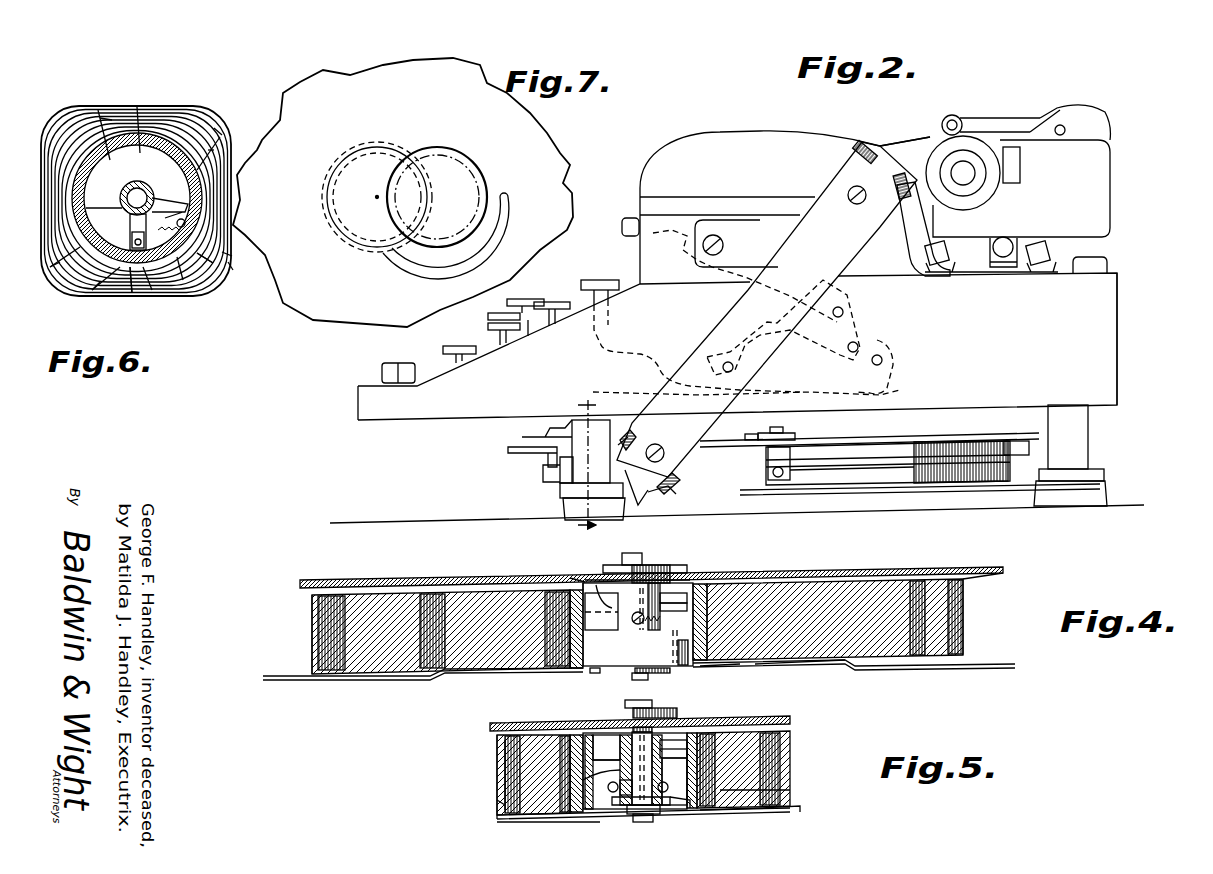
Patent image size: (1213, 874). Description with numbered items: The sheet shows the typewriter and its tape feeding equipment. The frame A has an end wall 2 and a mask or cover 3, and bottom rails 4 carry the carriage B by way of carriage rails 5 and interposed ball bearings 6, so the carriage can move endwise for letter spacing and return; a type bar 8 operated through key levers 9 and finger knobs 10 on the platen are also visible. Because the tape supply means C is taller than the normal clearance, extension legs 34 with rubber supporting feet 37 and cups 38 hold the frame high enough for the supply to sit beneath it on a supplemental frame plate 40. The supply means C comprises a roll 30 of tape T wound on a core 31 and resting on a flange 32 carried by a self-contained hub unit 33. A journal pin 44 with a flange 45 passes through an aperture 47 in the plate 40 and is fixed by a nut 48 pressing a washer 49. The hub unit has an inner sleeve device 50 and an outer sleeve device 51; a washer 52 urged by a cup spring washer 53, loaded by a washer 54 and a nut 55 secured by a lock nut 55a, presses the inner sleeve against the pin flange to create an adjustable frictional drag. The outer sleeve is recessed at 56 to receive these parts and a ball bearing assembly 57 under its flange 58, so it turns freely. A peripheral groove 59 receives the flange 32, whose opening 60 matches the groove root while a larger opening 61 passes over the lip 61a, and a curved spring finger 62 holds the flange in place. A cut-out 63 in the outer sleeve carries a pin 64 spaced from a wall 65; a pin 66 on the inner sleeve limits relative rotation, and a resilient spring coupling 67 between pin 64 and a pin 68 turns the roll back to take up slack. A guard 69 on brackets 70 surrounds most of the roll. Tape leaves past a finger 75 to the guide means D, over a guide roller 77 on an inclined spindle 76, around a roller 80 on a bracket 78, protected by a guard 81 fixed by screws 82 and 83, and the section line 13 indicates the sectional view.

In FIG. 2, the end wall 2 is at (1103, 308).
In FIG. 2, the mask or cover 3 is at (707, 135).
In FIG. 2, the bottom rails 4 is at (990, 252).
In FIG. 2, the carriage rails 5 is at (925, 250).
In FIG. 2, the ball bearings 6 is at (926, 268).
In FIG. 4, the ball bearings 6 is at (530, 626).
In FIG. 2, the type bar 8 is at (632, 240).
In FIG. 2, the key levers 9 is at (461, 313).
In FIG. 2, the finger knobs 10 is at (985, 200).
In FIG. 2, the section line 13 is at (587, 467).
In FIG. 4, the section line 13 is at (585, 554).
In FIG. 6, the roll 30 is at (183, 278).
In FIG. 2, the roll 30 is at (936, 442).
In FIG. 4, the roll 30 is at (963, 610).
In FIG. 5, the roll 30 is at (795, 746).
In FIG. 6, the core 31 is at (132, 293).
In FIG. 4, the core 31 is at (728, 583).
In FIG. 5, the core 31 is at (668, 735).
In FIG. 7, the flange 32 is at (383, 308).
In FIG. 2, the flange 32 is at (922, 495).
In FIG. 4, the flange 32 is at (990, 652).
In FIG. 5, the flange 32 is at (790, 810).
In FIG. 6, the hub unit 33 is at (143, 115).
In FIG. 7, the hub unit 33 is at (360, 210).
In FIG. 4, the hub unit 33 is at (560, 676).
In FIG. 5, the hub unit 33 is at (530, 824).
In FIG. 2, the extension legs 34 is at (1100, 451).
In FIG. 2, the rubber supporting feet 37 is at (563, 512).
In FIG. 2, the cups 38 is at (560, 492).
In FIG. 2, the supplemental frame plate 40 is at (912, 437).
In FIG. 4, the supplemental frame plate 40 is at (980, 566).
In FIG. 5, the supplemental frame plate 40 is at (545, 722).
In FIG. 6, the journal pin 44 is at (126, 214).
In FIG. 4, the journal pin 44 is at (596, 585).
In FIG. 5, the journal pin 44 is at (583, 776).
In FIG. 5, the flange 45 is at (602, 763).
In FIG. 4, the aperture 47 is at (680, 593).
In FIG. 5, the aperture 47 is at (632, 725).
In FIG. 2, the nut 48 is at (775, 427).
In FIG. 4, the nut 48 is at (645, 552).
In FIG. 5, the nut 48 is at (652, 709).
In FIG. 2, the washer 49 is at (745, 432).
In FIG. 4, the washer 49 is at (654, 575).
In FIG. 5, the washer 49 is at (655, 728).
In FIG. 6, the inner sleeve device 50 is at (214, 128).
In FIG. 4, the inner sleeve device 50 is at (620, 578).
In FIG. 5, the inner sleeve device 50 is at (792, 728).
In FIG. 6, the outer sleeve device 51 is at (100, 118).
In FIG. 4, the outer sleeve device 51 is at (638, 624).
In FIG. 5, the outer sleeve device 51 is at (760, 758).
In FIG. 5, the washer 52 is at (700, 780).
In FIG. 5, the cup spring washer 53 is at (690, 808).
In FIG. 5, the washer 54 is at (497, 818).
In FIG. 5, the nut 55 is at (660, 827).
In FIG. 5, the lock nut 55a is at (630, 814).
In FIG. 5, the recess 56 is at (612, 805).
In FIG. 5, the ball bearing assembly 57 is at (497, 801).
In FIG. 5, the flange 58 is at (497, 788).
In FIG. 4, the peripheral groove 59 is at (598, 676).
In FIG. 5, the peripheral groove 59 is at (842, 778).
In FIG. 7, the opening 60 is at (336, 197).
In FIG. 7, the opening 61 is at (438, 147).
In FIG. 4, the opening 61 is at (735, 666).
In FIG. 5, the opening 61 is at (790, 794).
In FIG. 7, the lip 61a is at (420, 192).
In FIG. 4, the lip 61a is at (690, 668).
In FIG. 5, the lip 61a is at (750, 812).
In FIG. 7, the curved spring finger 62 is at (418, 250).
In FIG. 4, the curved spring finger 62 is at (795, 666).
In FIG. 5, the curved spring finger 62 is at (800, 810).
In FIG. 6, the cut-out 63 is at (50, 267).
In FIG. 4, the cut-out 63 is at (585, 586).
In FIG. 5, the cut-out 63 is at (510, 752).
In FIG. 6, the pin 64 is at (213, 263).
In FIG. 4, the pin 64 is at (645, 626).
In FIG. 6, the wall 65 is at (208, 150).
In FIG. 4, the wall 65 is at (690, 585).
In FIG. 5, the wall 65 is at (700, 735).
In FIG. 6, the pin 66 is at (235, 268).
In FIG. 4, the pin 66 is at (660, 595).
In FIG. 5, the pin 66 is at (660, 742).
In FIG. 6, the resilient spring coupling 67 is at (150, 295).
In FIG. 4, the resilient spring coupling 67 is at (646, 622).
In FIG. 6, the pin 68 is at (92, 290).
In FIG. 4, the pin 68 is at (640, 612).
In FIG. 2, the guard 69 is at (882, 482).
In FIG. 2, the brackets 70 is at (538, 455).
In FIG. 2, the finger 75 is at (680, 488).
In FIG. 2, the inclined spindle 76 is at (680, 476).
In FIG. 2, the guide roller 77 is at (628, 432).
In FIG. 2, the bracket 78 is at (912, 198).
In FIG. 2, the roller 80 is at (864, 140).
In FIG. 2, the guard 81 is at (830, 280).
In FIG. 2, the screw 82 is at (660, 440).
In FIG. 2, the screw 83 is at (852, 192).
In FIG. 2, the frame A is at (1120, 354).
In FIG. 2, the carriage B is at (1114, 197).
In FIG. 2, the tape supply means C is at (850, 436).
In FIG. 4, the tape supply means C is at (310, 640).
In FIG. 5, the tape supply means C is at (480, 736).
In FIG. 2, the guide means D is at (712, 324).
In FIG. 6, the tape T is at (228, 262).
In FIG. 2, the tape T is at (910, 140).
In FIG. 4, the tape T is at (965, 582).